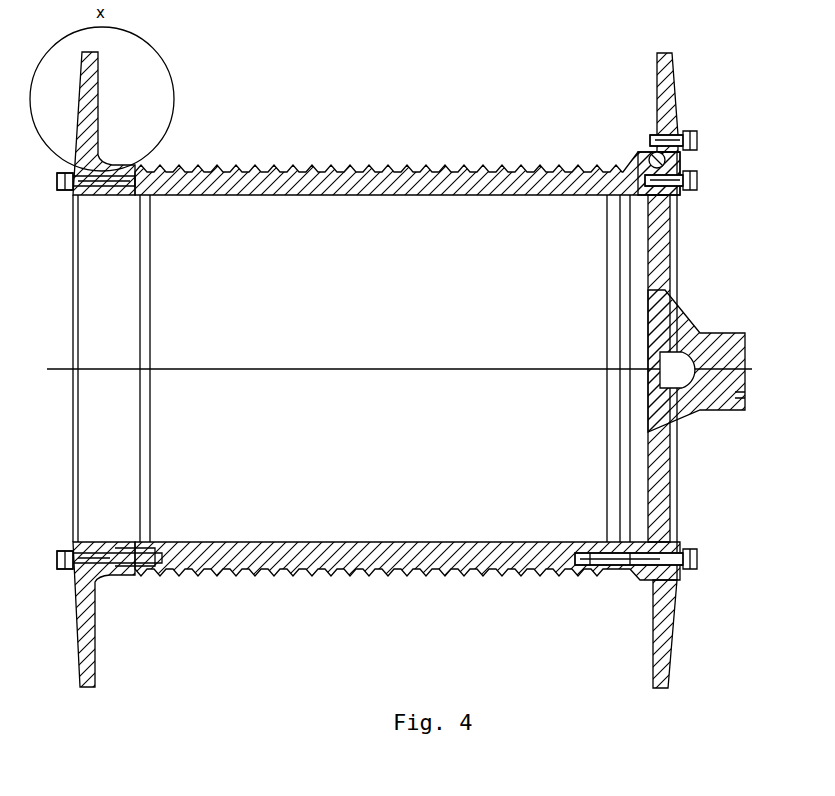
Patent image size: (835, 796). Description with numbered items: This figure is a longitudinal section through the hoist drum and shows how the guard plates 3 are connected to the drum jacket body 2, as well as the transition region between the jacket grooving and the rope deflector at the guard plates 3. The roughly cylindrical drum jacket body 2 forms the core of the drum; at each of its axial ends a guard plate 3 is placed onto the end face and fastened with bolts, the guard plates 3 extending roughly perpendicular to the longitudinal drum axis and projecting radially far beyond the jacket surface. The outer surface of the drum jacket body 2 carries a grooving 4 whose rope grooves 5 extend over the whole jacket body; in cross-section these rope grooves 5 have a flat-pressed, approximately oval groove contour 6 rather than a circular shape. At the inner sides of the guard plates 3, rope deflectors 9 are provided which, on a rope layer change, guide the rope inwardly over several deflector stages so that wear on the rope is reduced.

The drum jacket body 2 is at (416, 186).
The guard plates 3 is at (82, 78).
The grooving 4 is at (440, 165).
The rope grooves 5 is at (518, 165).
The groove contour 6 is at (222, 166).
The rope deflector 9 is at (637, 128).